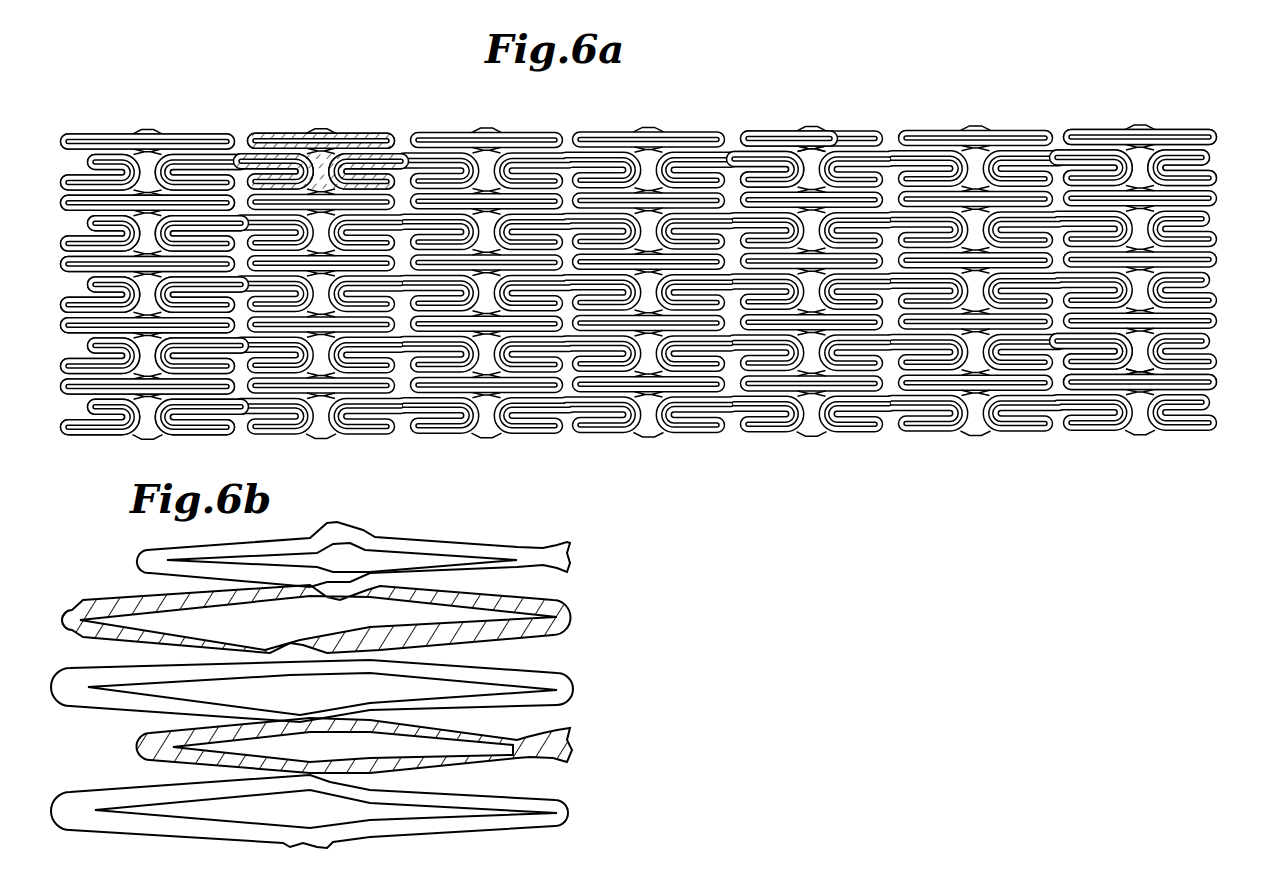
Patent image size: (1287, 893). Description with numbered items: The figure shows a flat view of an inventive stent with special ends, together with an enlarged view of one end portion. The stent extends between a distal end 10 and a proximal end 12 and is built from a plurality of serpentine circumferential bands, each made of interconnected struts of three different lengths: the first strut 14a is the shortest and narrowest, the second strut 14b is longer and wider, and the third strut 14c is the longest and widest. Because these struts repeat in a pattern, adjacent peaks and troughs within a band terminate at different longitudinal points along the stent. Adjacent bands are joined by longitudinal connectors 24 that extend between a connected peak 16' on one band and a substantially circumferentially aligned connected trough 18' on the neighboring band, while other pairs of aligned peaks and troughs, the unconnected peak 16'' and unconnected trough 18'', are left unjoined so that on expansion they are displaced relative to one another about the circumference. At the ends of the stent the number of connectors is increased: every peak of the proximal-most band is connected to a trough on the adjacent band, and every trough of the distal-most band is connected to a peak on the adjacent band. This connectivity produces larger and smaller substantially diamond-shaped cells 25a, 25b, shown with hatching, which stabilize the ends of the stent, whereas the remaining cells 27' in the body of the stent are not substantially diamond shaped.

In FIG. 6a, the distal end 10 is at (1210, 127).
In FIG. 6a, the proximal end 12 is at (95, 127).
In FIG. 6a, the cell 27' is at (324, 132).
In FIG. 6a, the first strut 14a is at (760, 139).
In FIG. 6a, the second strut 14b is at (777, 142).
In FIG. 6a, the third strut 14c is at (783, 155).
In FIG. 6a, the unconnected peak 16'' is at (1133, 111).
In FIG. 6a, the unconnected trough 18'' is at (1133, 123).
In FIG. 6a, the connected peak 16' is at (1091, 424).
In FIG. 6a, the longitudinal connector 24 is at (1130, 373).
In FIG. 6a, the connected trough 18' is at (1143, 439).
In FIG. 6b, the larger diamond-shaped cell 25a is at (533, 607).
In FIG. 6b, the smaller diamond-shaped cell 25b is at (517, 763).